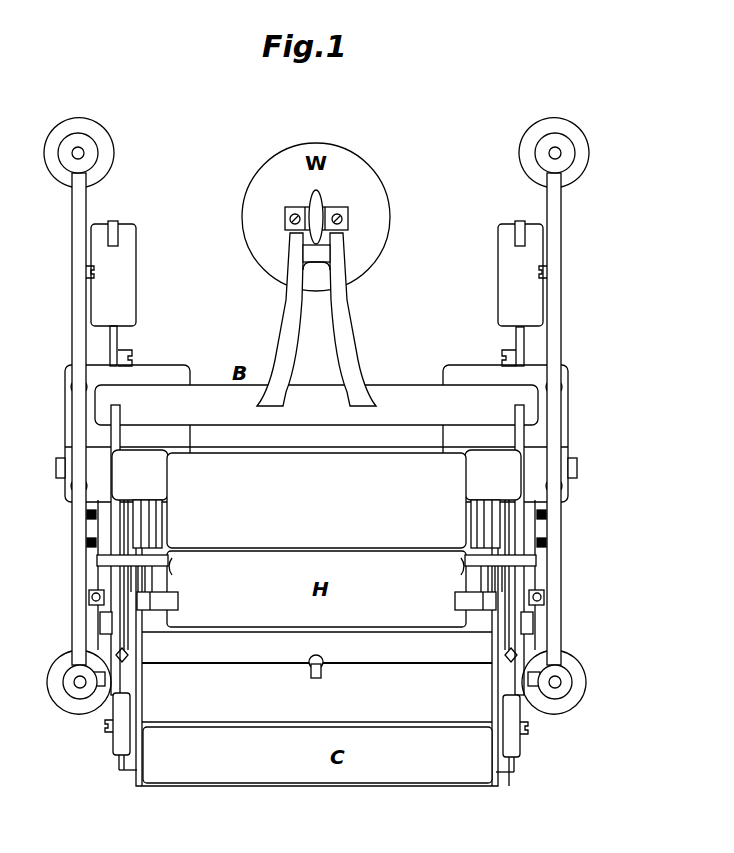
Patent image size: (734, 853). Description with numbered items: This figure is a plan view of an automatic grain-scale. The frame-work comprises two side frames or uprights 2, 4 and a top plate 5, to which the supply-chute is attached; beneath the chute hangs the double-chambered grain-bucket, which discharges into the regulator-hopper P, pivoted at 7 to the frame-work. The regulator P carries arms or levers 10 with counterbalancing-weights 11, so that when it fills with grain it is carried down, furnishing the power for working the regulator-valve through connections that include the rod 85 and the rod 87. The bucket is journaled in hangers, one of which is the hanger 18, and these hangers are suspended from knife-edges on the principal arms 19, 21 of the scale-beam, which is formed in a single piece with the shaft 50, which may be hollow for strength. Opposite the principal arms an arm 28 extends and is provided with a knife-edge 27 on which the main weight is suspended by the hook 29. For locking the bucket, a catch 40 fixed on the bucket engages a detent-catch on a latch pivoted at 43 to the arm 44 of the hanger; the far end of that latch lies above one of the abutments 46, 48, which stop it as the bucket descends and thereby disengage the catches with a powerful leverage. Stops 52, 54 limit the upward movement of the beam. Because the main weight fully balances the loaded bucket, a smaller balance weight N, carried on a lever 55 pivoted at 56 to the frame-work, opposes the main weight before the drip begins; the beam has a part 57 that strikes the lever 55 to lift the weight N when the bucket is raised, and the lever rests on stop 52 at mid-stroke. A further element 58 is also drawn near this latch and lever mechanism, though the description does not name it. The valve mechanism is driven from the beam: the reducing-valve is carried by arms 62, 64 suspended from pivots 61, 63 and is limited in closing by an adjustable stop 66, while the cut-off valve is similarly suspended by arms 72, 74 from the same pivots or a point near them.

The side frame 2 is at (555, 219).
The side frame 4 is at (76, 222).
The top plate 5 is at (88, 376).
The pivot 7 is at (57, 468).
The arm 10 is at (118, 336).
The counterbalancing-weight 11 is at (317, 273).
The hanger 18 is at (110, 637).
The principal arm of the scale-beam 19 is at (522, 444).
The principal arm of the scale-beam 21 is at (112, 440).
The knife-edge 27 is at (290, 222).
The arm 28 is at (340, 321).
The hook 29 is at (318, 204).
The catch 40 is at (128, 634).
The pivot 43 is at (104, 674).
The arm of the hanger 44 is at (79, 682).
The abutment 46 is at (88, 543).
The abutment 48 is at (88, 515).
The shaft 50 is at (427, 394).
The stop 52 is at (470, 562).
The stop 54 is at (146, 562).
The lever 55 is at (113, 578).
The pivot 56 is at (148, 497).
The part of the main beam 57 is at (108, 626).
The pivot 58 is at (118, 655).
The pivot 61 is at (458, 601).
The arm 62 is at (492, 622).
The pivot 63 is at (176, 602).
The arm 64 is at (118, 629).
The adjustable stop 66 is at (320, 661).
The arm 72 is at (458, 567).
The arm 74 is at (175, 567).
The rod 85 is at (128, 360).
The rod 87 is at (156, 522).
The balance weight N is at (118, 742).
The regulator-hopper P is at (508, 772).